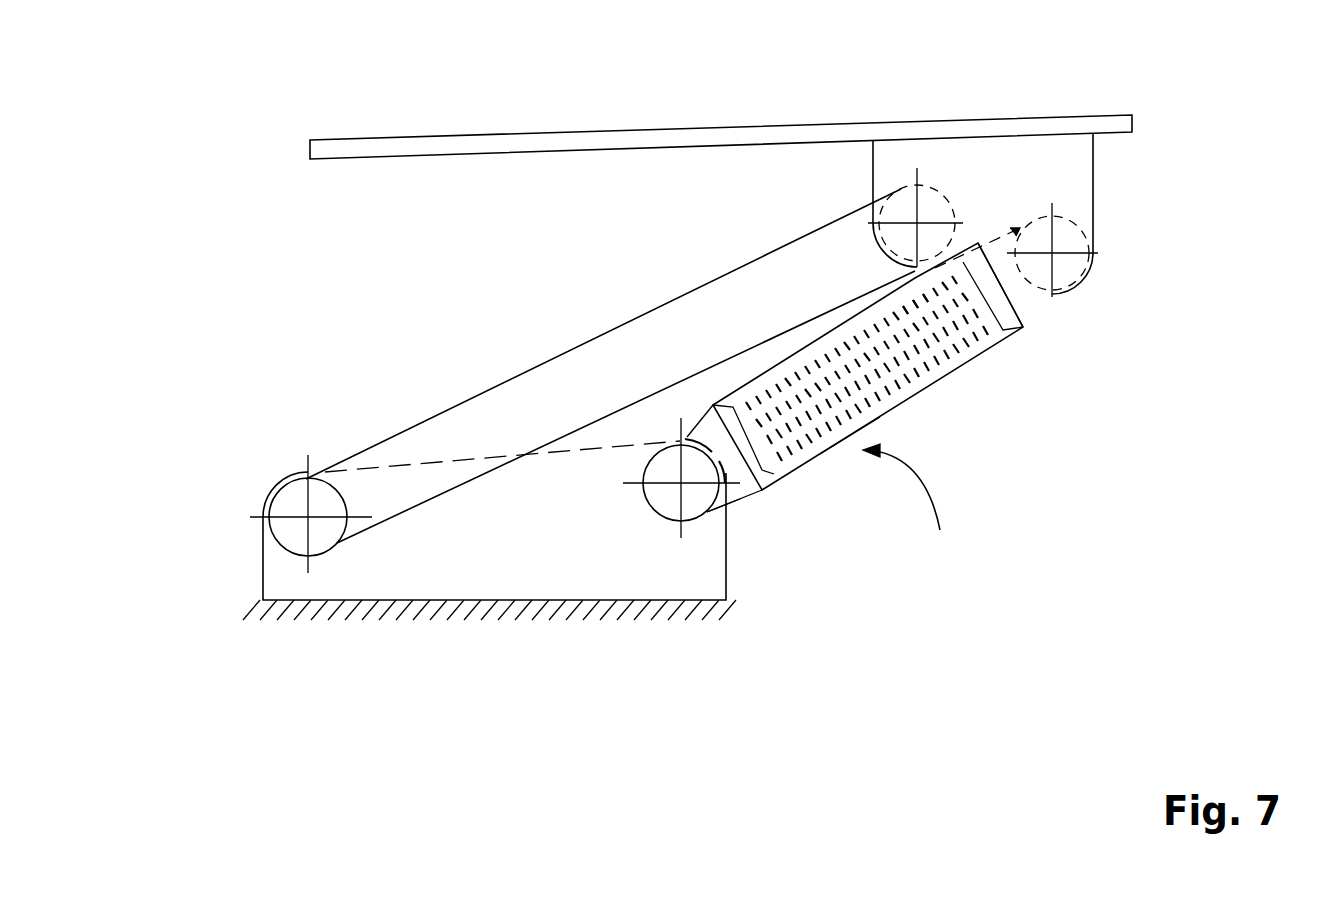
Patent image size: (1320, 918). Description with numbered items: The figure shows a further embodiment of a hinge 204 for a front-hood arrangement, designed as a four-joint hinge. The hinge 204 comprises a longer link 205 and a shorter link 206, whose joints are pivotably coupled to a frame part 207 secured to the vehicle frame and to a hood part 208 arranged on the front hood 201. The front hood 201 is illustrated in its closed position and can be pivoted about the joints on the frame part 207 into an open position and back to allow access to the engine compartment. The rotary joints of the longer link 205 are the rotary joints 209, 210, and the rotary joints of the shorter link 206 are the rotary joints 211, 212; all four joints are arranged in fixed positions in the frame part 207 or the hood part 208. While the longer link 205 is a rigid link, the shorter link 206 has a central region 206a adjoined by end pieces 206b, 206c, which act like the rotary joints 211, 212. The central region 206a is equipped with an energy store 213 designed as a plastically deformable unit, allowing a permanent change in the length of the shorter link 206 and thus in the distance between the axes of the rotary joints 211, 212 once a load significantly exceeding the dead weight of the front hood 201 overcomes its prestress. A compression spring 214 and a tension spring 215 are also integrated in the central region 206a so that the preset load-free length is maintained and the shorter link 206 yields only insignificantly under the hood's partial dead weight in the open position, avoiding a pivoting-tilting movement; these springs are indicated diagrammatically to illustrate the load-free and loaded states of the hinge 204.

The front hood 201 is at (388, 145).
The hinge 204 is at (672, 400).
The longer link 205 is at (608, 357).
The shorter link 206 is at (773, 490).
The central region 206a is at (850, 437).
The end piece 206b is at (728, 502).
The end piece 206c is at (1025, 303).
The frame part 207 is at (505, 569).
The hood part 208 is at (1022, 146).
The rotary joint 209 is at (290, 505).
The rotary joint 210 is at (933, 207).
The rotary joint 211 is at (665, 500).
The rotary joint 212 is at (1063, 235).
The energy store 213 is at (852, 378).
The compression spring 214 is at (938, 322).
The tension spring 215 is at (906, 390).